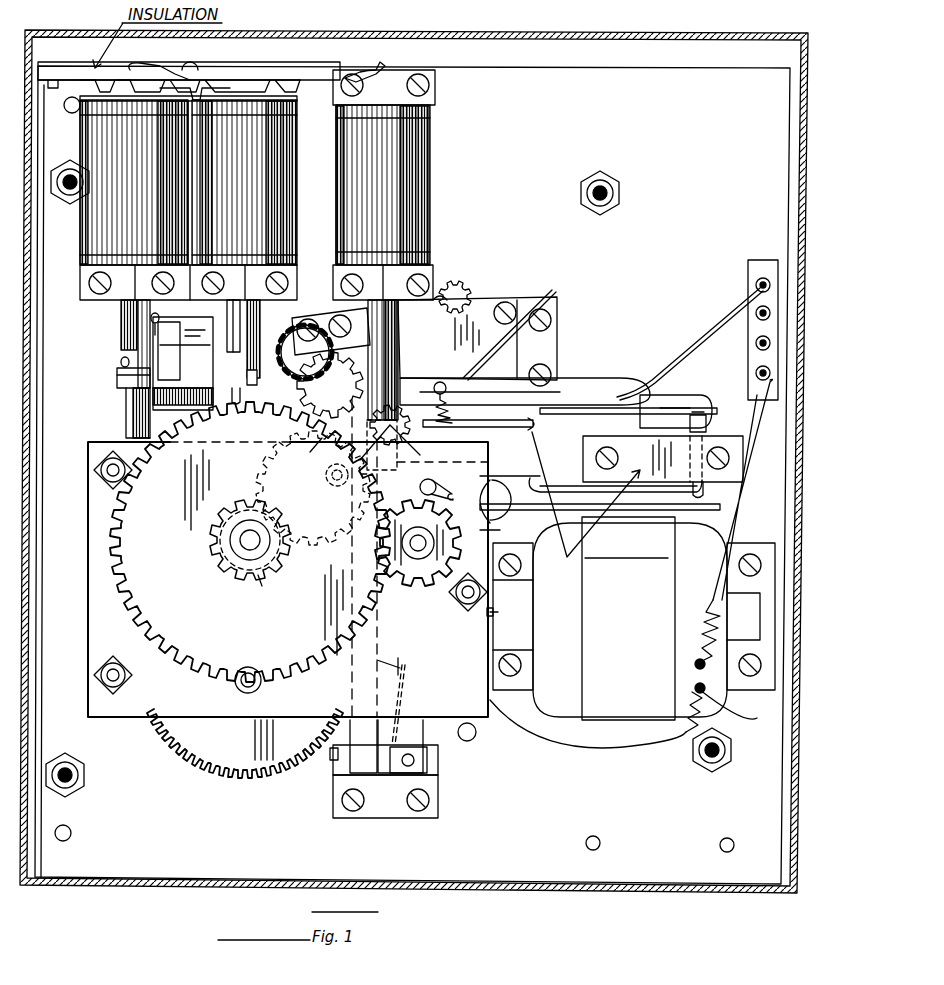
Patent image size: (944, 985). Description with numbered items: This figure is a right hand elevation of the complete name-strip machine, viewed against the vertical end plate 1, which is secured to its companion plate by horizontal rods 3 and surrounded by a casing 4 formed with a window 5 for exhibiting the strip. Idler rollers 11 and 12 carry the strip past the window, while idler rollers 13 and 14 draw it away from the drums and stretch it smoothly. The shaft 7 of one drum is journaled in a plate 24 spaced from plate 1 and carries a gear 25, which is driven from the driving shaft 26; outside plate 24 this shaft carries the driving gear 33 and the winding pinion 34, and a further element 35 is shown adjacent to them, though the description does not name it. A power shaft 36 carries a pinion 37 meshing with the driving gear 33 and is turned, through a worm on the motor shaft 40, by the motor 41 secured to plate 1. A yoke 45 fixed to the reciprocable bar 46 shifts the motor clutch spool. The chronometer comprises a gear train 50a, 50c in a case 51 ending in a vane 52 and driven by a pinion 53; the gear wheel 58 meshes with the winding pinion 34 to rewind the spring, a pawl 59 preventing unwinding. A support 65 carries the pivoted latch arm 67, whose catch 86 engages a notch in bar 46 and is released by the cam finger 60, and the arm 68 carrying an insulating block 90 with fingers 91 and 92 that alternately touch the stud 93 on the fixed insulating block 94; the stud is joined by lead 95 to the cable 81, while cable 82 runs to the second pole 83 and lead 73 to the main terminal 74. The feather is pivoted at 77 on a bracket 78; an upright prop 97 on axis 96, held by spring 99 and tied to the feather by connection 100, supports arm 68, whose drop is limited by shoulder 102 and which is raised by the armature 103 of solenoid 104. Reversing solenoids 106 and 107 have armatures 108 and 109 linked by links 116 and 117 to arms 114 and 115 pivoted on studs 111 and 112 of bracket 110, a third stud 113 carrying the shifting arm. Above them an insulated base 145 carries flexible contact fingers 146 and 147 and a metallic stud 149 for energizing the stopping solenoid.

The vertical end plate 1 is at (412, 475).
The horizontal rod 3 is at (70, 185).
The casing 4 is at (548, 38).
The window 5 is at (40, 548).
The shaft 7 is at (261, 686).
The idler roller 11 is at (72, 118).
The idler roller 12 is at (72, 830).
The idler roller 13 is at (583, 843).
The idler roller 14 is at (718, 845).
The plate 24 is at (123, 717).
The gear 25 is at (210, 760).
The driving shaft 26 is at (246, 544).
The driving gear 33 is at (145, 596).
The winding pinion 34 is at (266, 594).
The pivot 35 is at (330, 478).
The power shaft 36 is at (428, 538).
The pinion 37 is at (432, 585).
The motor shaft 40 is at (487, 612).
The motor 41 is at (634, 576).
The yoke 45 is at (496, 528).
The reciprocable bar 46 is at (500, 505).
The gear train 50a is at (322, 360).
The gear train 50c is at (472, 296).
The case 51 is at (477, 341).
The vane 52 is at (548, 290).
The pinion 53 is at (335, 380).
The gear wheel 58 is at (405, 428).
The pawl 59 is at (440, 484).
The cam finger 60 is at (556, 486).
The support 65 is at (640, 462).
The latch arm 67 is at (588, 392).
The arm 68 is at (575, 440).
The lead 73 is at (690, 352).
The main terminal 74 is at (756, 285).
The pivot 77 is at (330, 754).
The bracket 78 is at (340, 778).
The cable 81 is at (622, 748).
The cable 82 is at (748, 505).
The second pole 83 is at (756, 374).
The catch 86 is at (492, 420).
The insulating block 90 is at (515, 428).
The metallic finger 91 is at (660, 406).
The metallic finger 92 is at (640, 508).
The metallic stud 93 is at (704, 492).
The fixed insulating block 94 is at (688, 422).
The lead 95 is at (723, 708).
The axis 96 is at (428, 765).
The prop 97 is at (363, 746).
The spring 99 is at (392, 750).
The connection 100 is at (403, 700).
The shoulder 102 is at (305, 456).
The armature 103 is at (430, 290).
The solenoid 104 is at (400, 212).
The reversing solenoid 106 is at (98, 232).
The reversing solenoid 107 is at (270, 193).
The armature 108 is at (121, 312).
The armature 109 is at (283, 290).
The bracket 110 is at (185, 380).
The stud 111 is at (117, 372).
The stud 112 is at (257, 378).
The stud 113 is at (158, 325).
The arm 114 is at (126, 410).
The arm 115 is at (242, 398).
The link 116 is at (138, 348).
The link 117 is at (248, 352).
The insulated base 145 is at (78, 55).
The flexible contact finger 146 is at (118, 72).
The flexible contact finger 147 is at (232, 78).
The metallic stud 149 is at (188, 66).